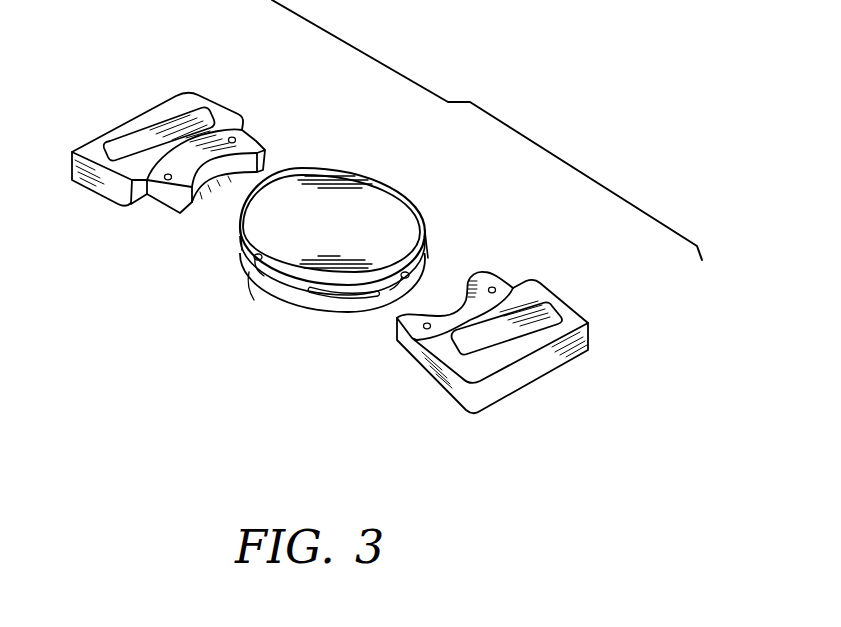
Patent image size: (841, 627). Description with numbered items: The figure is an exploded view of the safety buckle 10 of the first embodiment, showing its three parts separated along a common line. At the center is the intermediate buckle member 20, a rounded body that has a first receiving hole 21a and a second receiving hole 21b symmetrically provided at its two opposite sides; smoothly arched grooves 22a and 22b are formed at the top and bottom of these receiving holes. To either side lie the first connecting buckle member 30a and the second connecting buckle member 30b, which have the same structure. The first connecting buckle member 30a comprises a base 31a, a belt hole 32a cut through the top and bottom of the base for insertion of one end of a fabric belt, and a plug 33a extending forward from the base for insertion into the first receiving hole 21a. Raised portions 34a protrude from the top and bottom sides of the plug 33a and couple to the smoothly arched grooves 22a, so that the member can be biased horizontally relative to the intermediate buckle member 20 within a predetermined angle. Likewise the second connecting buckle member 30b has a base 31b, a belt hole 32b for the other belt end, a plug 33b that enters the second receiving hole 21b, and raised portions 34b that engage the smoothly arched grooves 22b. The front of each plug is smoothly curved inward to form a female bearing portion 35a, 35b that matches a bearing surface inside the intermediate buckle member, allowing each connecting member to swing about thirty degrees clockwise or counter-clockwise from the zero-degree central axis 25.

The safety buckle 10 is at (487, 130).
The intermediate buckle member 20 is at (407, 197).
The first receiving hole 21a is at (252, 262).
The second receiving hole 21b is at (386, 294).
The smoothly arched grooves 22a is at (255, 301).
The smoothly arched grooves 22b is at (310, 295).
The zero-degree central axis 25 is at (236, 228).
The first connecting buckle member 30a is at (227, 92).
The second connecting buckle member 30b is at (567, 294).
The base 31a is at (96, 180).
The base 31b is at (458, 393).
The belt hole 32a is at (148, 134).
The belt hole 32b is at (506, 348).
The plug 33a is at (267, 151).
The plug 33b is at (484, 285).
The raised portions 34a is at (236, 138).
The raised portions 34b is at (496, 289).
The female bearing portion 35a is at (226, 191).
The female bearing portion 35b is at (461, 306).